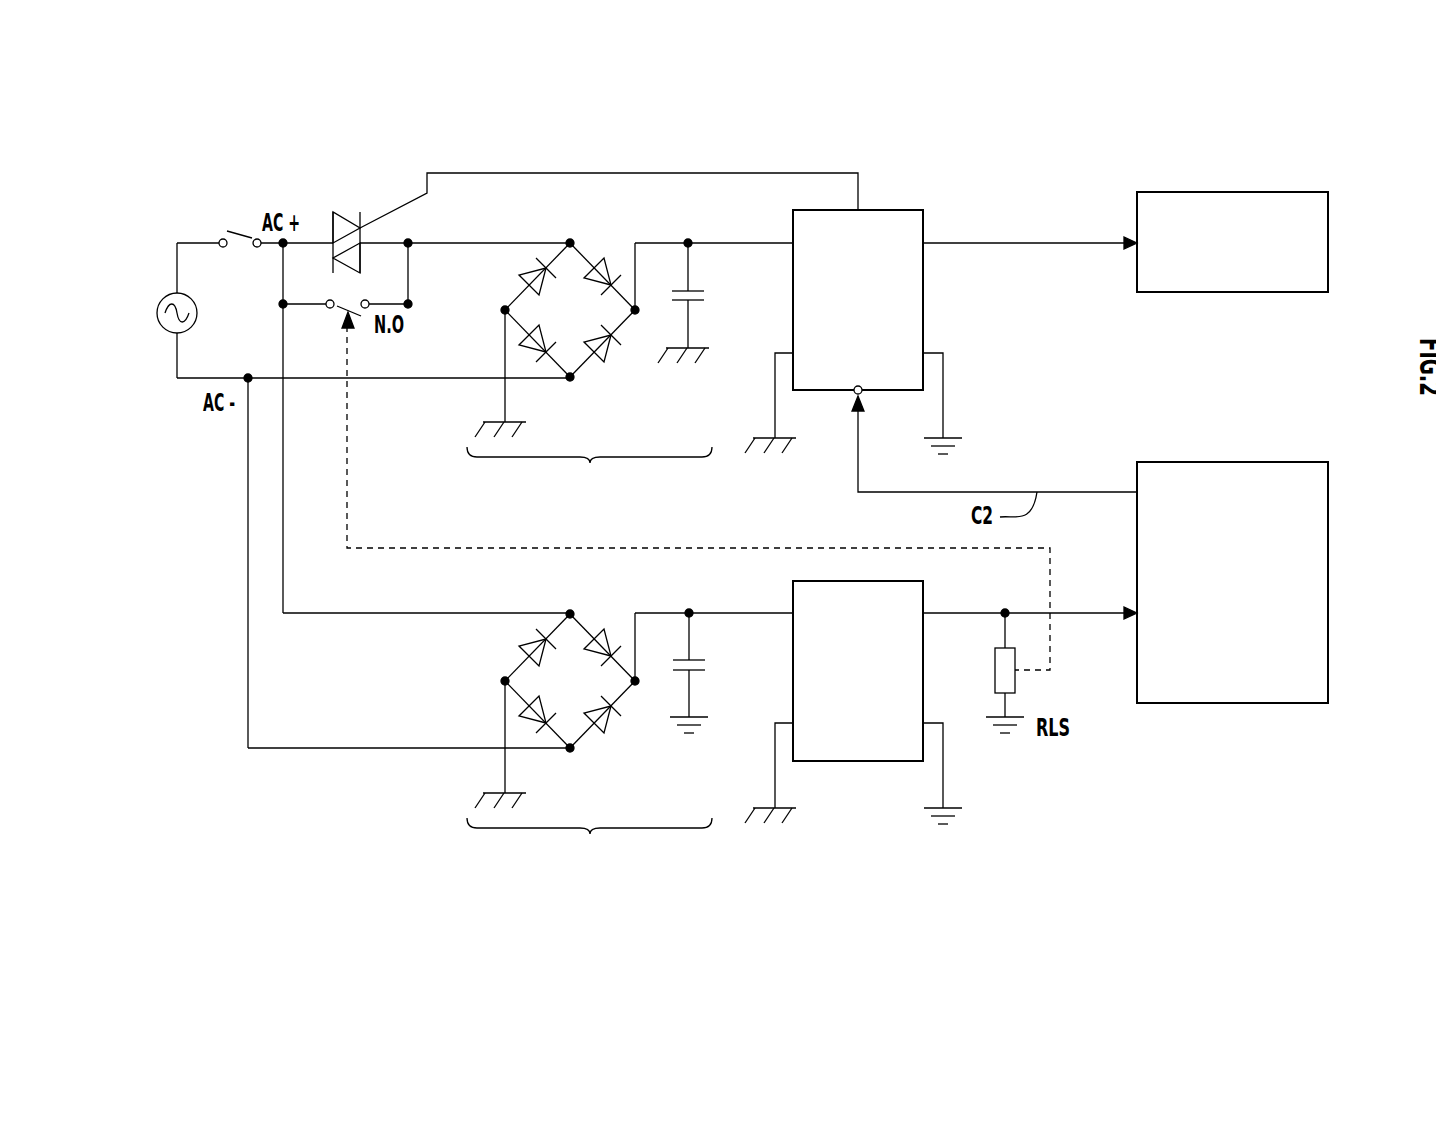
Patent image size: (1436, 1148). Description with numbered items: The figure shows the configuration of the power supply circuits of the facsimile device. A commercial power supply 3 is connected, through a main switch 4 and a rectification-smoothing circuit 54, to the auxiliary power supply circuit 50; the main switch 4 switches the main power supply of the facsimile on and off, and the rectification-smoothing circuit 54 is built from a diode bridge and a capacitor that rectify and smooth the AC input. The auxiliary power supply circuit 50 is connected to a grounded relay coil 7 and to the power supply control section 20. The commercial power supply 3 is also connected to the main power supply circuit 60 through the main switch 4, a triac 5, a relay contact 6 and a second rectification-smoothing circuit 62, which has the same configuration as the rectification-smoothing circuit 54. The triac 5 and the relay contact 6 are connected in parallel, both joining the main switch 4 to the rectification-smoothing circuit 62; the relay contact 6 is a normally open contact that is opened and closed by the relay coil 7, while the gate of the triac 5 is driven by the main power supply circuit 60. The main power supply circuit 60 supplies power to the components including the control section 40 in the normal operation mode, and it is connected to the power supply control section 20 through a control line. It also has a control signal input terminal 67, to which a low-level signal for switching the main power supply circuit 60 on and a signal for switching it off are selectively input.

The commercial power supply 3 is at (163, 296).
The main switch 4 is at (240, 231).
The triac 5 is at (345, 212).
The relay contact 6 is at (337, 312).
The relay coil 7 is at (1015, 687).
The power supply control section 20 is at (1330, 462).
The control section 40 is at (1330, 208).
The auxiliary power supply circuit 50 is at (927, 651).
The rectification-smoothing circuit 54 is at (589, 746).
The main power supply circuit 60 is at (927, 300).
The rectification-smoothing circuit 62 is at (589, 374).
The control signal input terminal 67 is at (852, 396).